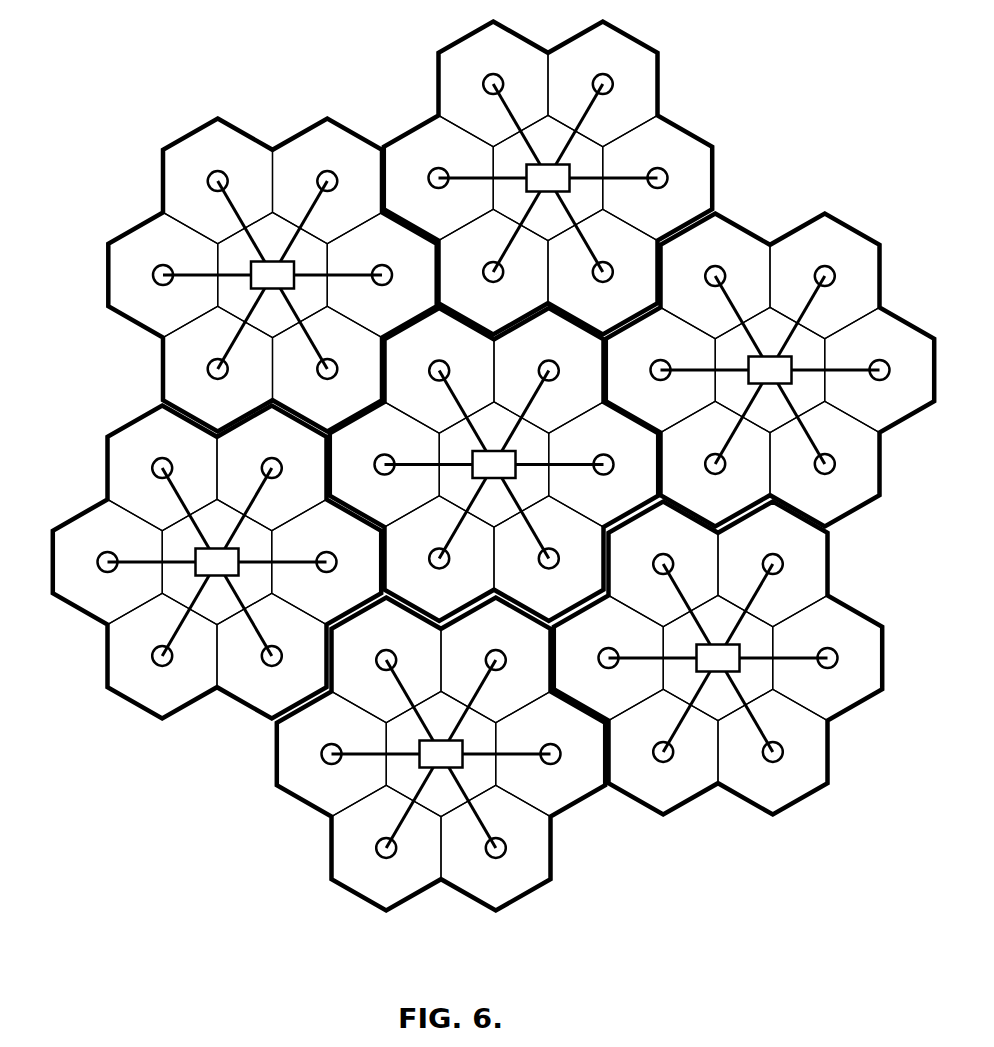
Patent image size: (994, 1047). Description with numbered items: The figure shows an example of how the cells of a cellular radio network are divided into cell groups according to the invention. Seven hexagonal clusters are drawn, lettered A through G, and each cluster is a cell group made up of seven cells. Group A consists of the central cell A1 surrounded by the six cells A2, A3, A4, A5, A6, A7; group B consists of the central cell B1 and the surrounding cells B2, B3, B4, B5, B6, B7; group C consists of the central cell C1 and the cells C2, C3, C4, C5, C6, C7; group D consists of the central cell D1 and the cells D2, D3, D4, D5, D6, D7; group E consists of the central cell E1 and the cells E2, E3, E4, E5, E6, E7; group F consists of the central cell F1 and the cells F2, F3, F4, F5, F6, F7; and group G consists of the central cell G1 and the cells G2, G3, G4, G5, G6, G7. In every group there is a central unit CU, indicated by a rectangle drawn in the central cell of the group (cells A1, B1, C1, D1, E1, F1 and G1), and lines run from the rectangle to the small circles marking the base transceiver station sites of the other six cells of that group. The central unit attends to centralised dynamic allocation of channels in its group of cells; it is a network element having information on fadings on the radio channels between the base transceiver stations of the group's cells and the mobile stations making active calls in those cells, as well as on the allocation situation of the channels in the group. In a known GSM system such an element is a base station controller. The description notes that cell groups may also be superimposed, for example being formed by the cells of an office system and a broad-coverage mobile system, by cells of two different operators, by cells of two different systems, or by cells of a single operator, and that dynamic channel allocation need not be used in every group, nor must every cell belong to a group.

The cell A1 is at (494, 464).
The cell A2 is at (439, 386).
The cell A3 is at (549, 386).
The cell A4 is at (576, 464).
The cell A5 is at (549, 543).
The cell A6 is at (439, 543).
The cell A7 is at (412, 464).
The cell B1 is at (273, 274).
The cell B2 is at (218, 197).
The cell B3 is at (328, 197).
The cell B4 is at (355, 274).
The cell B5 is at (328, 353).
The cell B6 is at (218, 353).
The cell B7 is at (190, 274).
The cell C1 is at (548, 177).
The cell C2 is at (493, 100).
The cell C3 is at (603, 100).
The cell C4 is at (630, 177).
The cell C5 is at (603, 256).
The cell C6 is at (493, 256).
The cell C7 is at (466, 177).
The cell D1 is at (770, 369).
The cell D2 is at (715, 292).
The cell D3 is at (825, 292).
The cell D4 is at (852, 369).
The cell D5 is at (825, 448).
The cell D6 is at (715, 448).
The cell D7 is at (688, 369).
The cell E1 is at (718, 657).
The cell E2 is at (663, 580).
The cell E3 is at (773, 580).
The cell E4 is at (800, 657).
The cell E5 is at (773, 736).
The cell E6 is at (663, 736).
The cell E7 is at (636, 657).
The cell F1 is at (441, 753).
The cell F2 is at (386, 676).
The cell F3 is at (496, 676).
The cell F4 is at (523, 753).
The cell F5 is at (496, 832).
The cell F6 is at (386, 832).
The cell F7 is at (359, 753).
The cell G1 is at (217, 561).
The cell G2 is at (162, 484).
The cell G3 is at (272, 484).
The cell G4 is at (299, 561).
The cell G5 is at (272, 640).
The cell G6 is at (162, 640).
The cell G7 is at (135, 561).